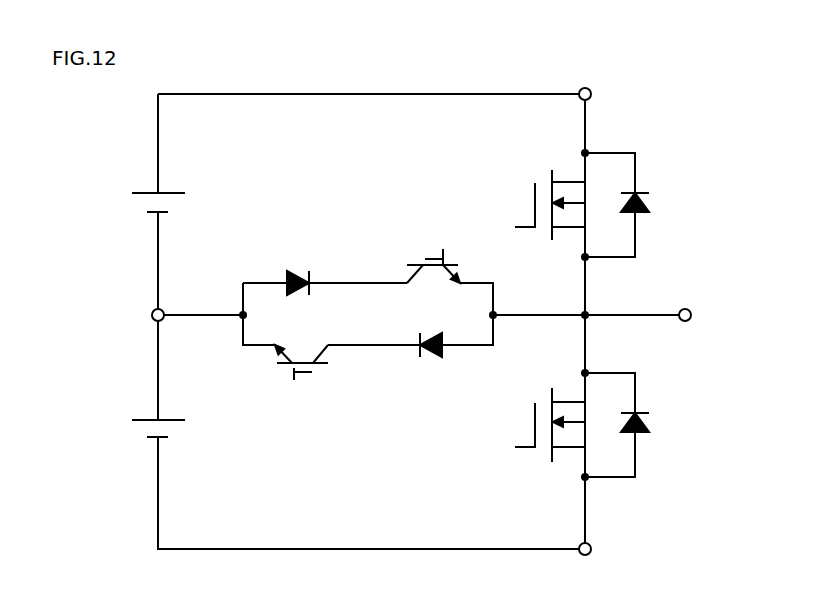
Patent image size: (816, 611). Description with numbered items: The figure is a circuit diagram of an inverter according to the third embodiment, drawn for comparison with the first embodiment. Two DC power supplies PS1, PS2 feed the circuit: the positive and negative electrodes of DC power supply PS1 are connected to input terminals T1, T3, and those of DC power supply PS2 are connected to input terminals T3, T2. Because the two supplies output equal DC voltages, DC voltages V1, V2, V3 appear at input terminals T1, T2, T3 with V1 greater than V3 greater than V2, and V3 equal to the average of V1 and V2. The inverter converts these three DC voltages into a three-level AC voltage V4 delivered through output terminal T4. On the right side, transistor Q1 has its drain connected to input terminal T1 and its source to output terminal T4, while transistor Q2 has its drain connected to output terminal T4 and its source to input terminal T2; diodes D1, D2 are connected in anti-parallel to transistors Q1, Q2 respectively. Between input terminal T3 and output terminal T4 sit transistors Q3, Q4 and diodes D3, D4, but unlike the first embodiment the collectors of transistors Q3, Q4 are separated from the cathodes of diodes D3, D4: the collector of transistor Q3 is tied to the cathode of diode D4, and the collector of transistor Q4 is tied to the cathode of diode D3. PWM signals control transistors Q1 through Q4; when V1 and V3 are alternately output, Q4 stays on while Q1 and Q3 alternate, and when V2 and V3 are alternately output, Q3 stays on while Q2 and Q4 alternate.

The DC power supply PS1 is at (147, 193).
The DC power supply PS2 is at (147, 420).
The input terminal T1 is at (592, 96).
The input terminal T2 is at (592, 550).
The input terminal T3 is at (163, 319).
The output terminal T4 is at (685, 322).
The DC voltage V1 is at (583, 86).
The DC voltage V2 is at (583, 559).
The DC voltage V3 is at (136, 314).
The AC voltage V4 is at (696, 316).
The transistor Q1 is at (535, 203).
The transistor Q2 is at (535, 422).
The transistor Q3 is at (298, 381).
The transistor Q4 is at (432, 249).
The diode D1 is at (650, 203).
The diode D2 is at (650, 423).
The diode D3 is at (303, 272).
The diode D4 is at (430, 360).